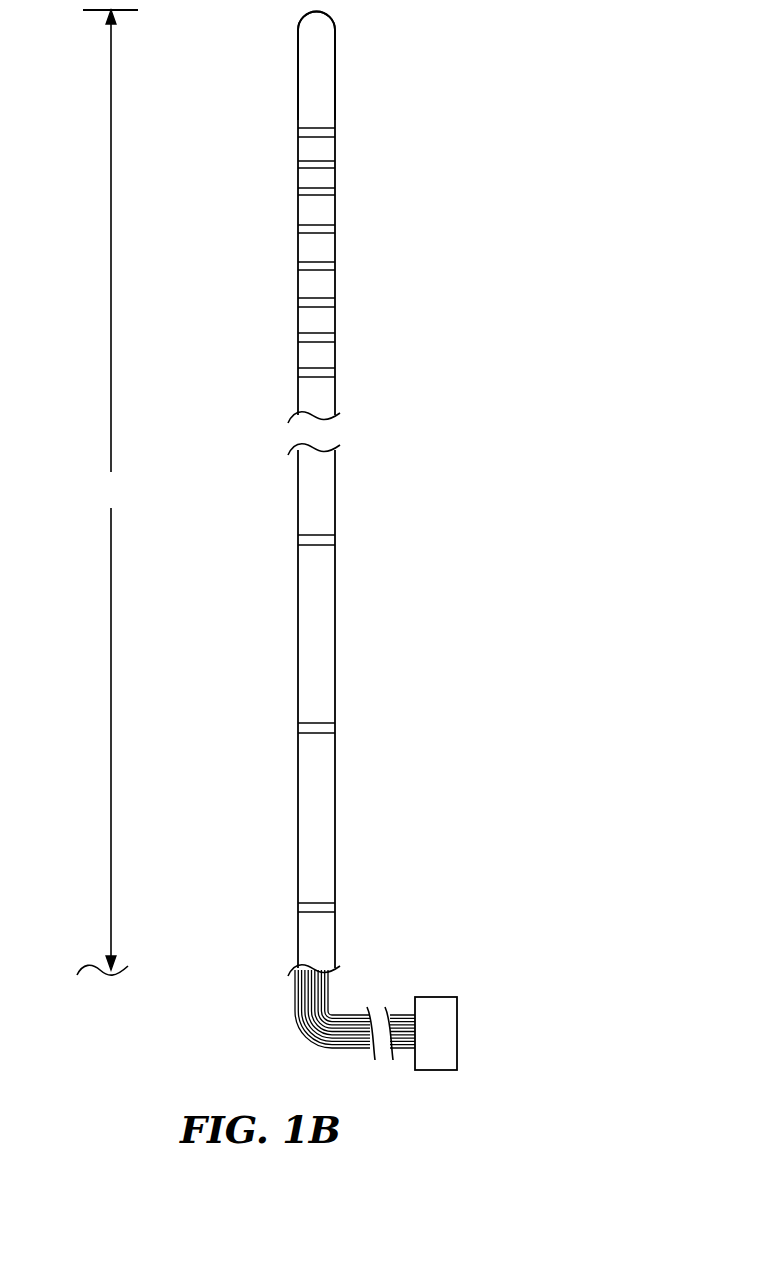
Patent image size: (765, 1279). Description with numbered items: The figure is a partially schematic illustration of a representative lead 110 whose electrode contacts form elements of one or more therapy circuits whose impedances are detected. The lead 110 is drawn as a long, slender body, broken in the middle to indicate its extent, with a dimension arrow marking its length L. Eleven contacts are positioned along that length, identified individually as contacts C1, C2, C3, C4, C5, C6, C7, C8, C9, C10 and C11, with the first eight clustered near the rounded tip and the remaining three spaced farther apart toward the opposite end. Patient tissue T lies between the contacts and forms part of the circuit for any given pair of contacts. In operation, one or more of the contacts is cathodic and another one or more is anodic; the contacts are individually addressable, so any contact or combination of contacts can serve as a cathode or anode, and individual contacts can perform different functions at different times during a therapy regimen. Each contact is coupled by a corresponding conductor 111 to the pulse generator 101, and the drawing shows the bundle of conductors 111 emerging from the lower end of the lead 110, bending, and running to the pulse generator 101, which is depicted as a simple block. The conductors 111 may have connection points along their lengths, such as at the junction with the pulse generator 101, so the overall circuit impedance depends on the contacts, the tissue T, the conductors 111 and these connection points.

The lead 110 is at (400, 828).
The pulse generator 101 is at (457, 1017).
The conductor 111 is at (331, 985).
The contact C1 is at (301, 133).
The contact C2 is at (301, 164).
The contact C3 is at (301, 191).
The contact C4 is at (301, 229).
The contact C5 is at (301, 265).
The contact C6 is at (301, 302).
The contact C7 is at (301, 337).
The contact C8 is at (301, 372).
The contact C9 is at (301, 540).
The contact C10 is at (301, 728).
The contact C11 is at (301, 907).
The patient tissue T is at (335, 110).
The length L is at (107, 492).